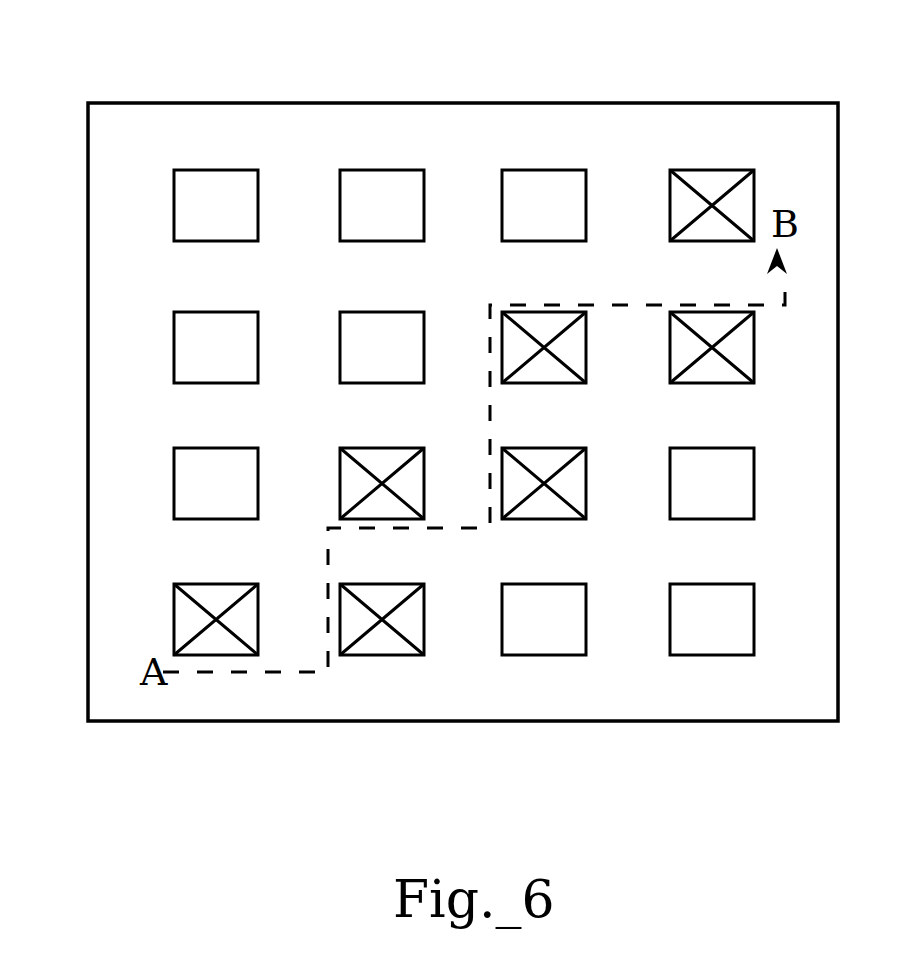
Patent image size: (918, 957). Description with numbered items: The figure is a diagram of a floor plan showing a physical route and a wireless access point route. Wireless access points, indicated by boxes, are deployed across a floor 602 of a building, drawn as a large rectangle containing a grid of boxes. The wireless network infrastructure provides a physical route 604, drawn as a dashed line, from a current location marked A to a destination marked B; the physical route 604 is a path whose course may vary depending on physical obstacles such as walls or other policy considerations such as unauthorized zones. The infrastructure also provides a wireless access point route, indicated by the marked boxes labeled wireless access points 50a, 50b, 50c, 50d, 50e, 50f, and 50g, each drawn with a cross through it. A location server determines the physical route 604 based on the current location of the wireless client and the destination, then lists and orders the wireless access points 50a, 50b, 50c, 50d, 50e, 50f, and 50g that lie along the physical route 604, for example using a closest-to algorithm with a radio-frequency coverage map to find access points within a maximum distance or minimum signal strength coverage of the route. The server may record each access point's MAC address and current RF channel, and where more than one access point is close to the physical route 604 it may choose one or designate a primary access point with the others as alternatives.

The floor 602 is at (135, 722).
The physical route 604 is at (440, 528).
The wireless access point 50a is at (173, 609).
The wireless access point 50b is at (406, 657).
The wireless access point 50c is at (336, 478).
The wireless access point 50d is at (565, 520).
The wireless access point 50e is at (543, 383).
The wireless access point 50f is at (710, 383).
The wireless access point 50g is at (712, 170).